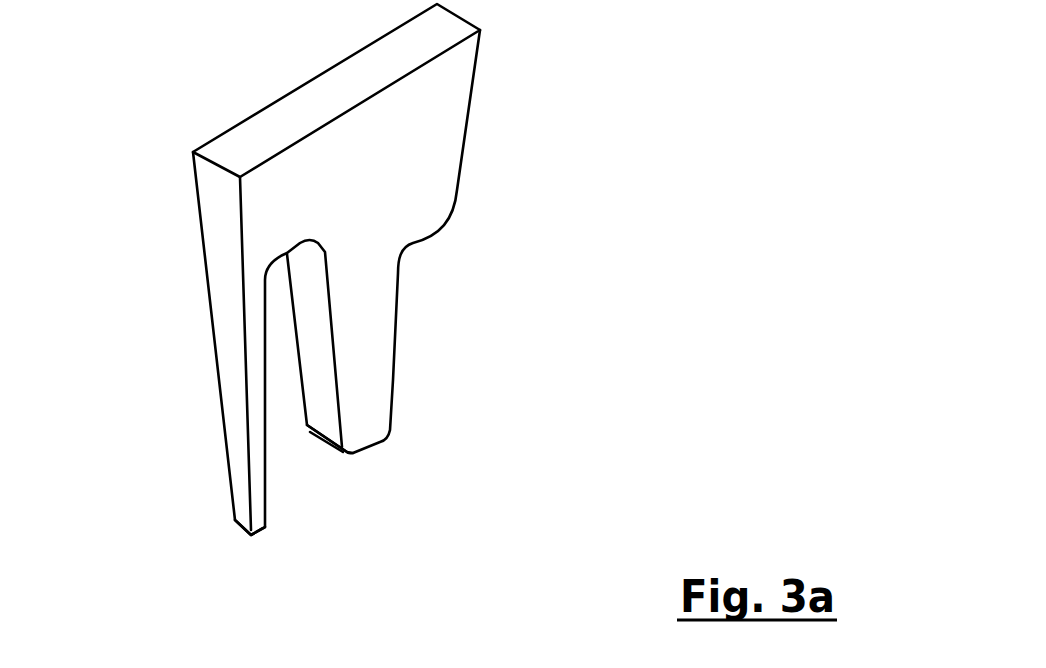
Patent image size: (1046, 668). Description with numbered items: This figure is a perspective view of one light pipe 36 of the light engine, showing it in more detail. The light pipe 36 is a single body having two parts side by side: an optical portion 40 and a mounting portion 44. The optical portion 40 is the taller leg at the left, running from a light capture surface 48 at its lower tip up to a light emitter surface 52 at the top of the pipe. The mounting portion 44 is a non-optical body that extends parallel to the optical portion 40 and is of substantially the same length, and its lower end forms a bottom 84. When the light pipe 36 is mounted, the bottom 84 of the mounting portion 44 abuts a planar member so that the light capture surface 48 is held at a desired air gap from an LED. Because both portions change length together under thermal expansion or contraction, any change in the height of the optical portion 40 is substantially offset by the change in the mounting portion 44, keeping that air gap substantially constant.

The light pipe 36 is at (385, 328).
The light emitter surface 52 is at (245, 133).
The optical portion 40 is at (224, 402).
The mounting portion 44 is at (467, 302).
The light capture surface 48 is at (255, 540).
The bottom of the non optical portion 84 is at (365, 455).